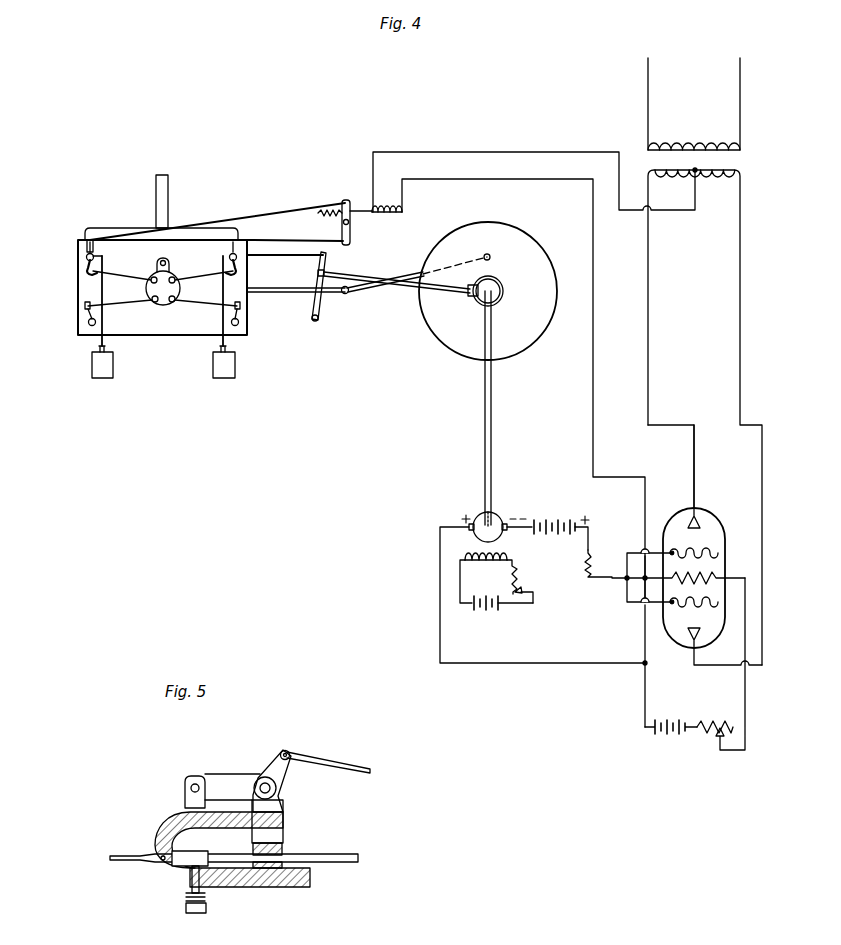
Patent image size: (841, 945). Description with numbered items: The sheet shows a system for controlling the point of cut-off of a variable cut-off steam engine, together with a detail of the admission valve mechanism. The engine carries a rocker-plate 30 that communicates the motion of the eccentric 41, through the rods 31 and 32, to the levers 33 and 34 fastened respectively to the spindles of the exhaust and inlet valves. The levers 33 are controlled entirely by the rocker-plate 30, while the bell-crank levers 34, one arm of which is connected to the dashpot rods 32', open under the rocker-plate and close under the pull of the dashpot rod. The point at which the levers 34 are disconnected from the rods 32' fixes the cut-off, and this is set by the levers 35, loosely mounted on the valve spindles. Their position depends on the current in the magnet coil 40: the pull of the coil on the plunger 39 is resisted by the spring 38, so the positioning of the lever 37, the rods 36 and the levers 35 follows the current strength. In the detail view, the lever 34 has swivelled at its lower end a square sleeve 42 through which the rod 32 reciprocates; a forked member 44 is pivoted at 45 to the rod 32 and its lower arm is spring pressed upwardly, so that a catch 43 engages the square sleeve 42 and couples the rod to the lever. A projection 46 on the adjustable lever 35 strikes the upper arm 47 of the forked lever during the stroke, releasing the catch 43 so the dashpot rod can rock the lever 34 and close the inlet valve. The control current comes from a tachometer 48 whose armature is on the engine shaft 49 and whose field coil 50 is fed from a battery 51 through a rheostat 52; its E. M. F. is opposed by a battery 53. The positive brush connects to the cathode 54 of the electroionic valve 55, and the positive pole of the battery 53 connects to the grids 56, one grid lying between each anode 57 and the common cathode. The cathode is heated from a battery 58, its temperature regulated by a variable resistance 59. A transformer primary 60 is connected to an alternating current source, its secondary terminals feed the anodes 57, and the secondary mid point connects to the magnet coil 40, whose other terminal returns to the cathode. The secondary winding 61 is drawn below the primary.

In FIG. 4, the rocker-plate 30 is at (162, 305).
In FIG. 4, the rods 31 is at (130, 304).
In FIG. 4, the rods 32 is at (163, 287).
In FIG. 5, the rods 32 is at (228, 872).
In FIG. 4, the dashpot rods 32' is at (165, 317).
In FIG. 5, the dashpot rods 32' is at (170, 792).
In FIG. 4, the levers 33 is at (84, 310).
In FIG. 4, the bell-crank levers 34 is at (80, 262).
In FIG. 5, the bell-crank levers 34 is at (284, 804).
In FIG. 4, the levers 35 is at (85, 245).
In FIG. 5, the levers 35 is at (290, 768).
In FIG. 4, the rods 36 is at (295, 196).
In FIG. 5, the rods 36 is at (340, 756).
In FIG. 4, the lever 37 is at (352, 238).
In FIG. 4, the spring 38 is at (328, 208).
In FIG. 4, the plunger 39 is at (364, 210).
In FIG. 4, the magnet coil 40 is at (397, 218).
In FIG. 4, the eccentric 41 is at (505, 289).
In FIG. 5, the square sleeve 42 is at (262, 869).
In FIG. 5, the catch 43 is at (296, 888).
In FIG. 5, the forked member 44 is at (170, 822).
In FIG. 5, the pivot 45 is at (165, 866).
In FIG. 5, the projection 46 is at (246, 800).
In FIG. 5, the upper arm 47 is at (284, 822).
In FIG. 4, the tachometer 48 is at (478, 513).
In FIG. 4, the engine shaft 49 is at (492, 415).
In FIG. 4, the field coil 50 is at (490, 568).
In FIG. 4, the battery 51 is at (484, 614).
In FIG. 4, the rheostat 52 is at (524, 576).
In FIG. 4, the battery 53 is at (551, 518).
In FIG. 4, the cathode 54 is at (710, 573).
In FIG. 4, the electroionic valve 55 is at (672, 640).
In FIG. 4, the grids 56 is at (708, 548).
In FIG. 4, the anodes 57 is at (694, 524).
In FIG. 4, the battery 58 is at (672, 735).
In FIG. 4, the variable resistance 59 is at (710, 722).
In FIG. 4, the primary 60 is at (690, 146).
In FIG. 4, the secondary coil 61 is at (718, 186).